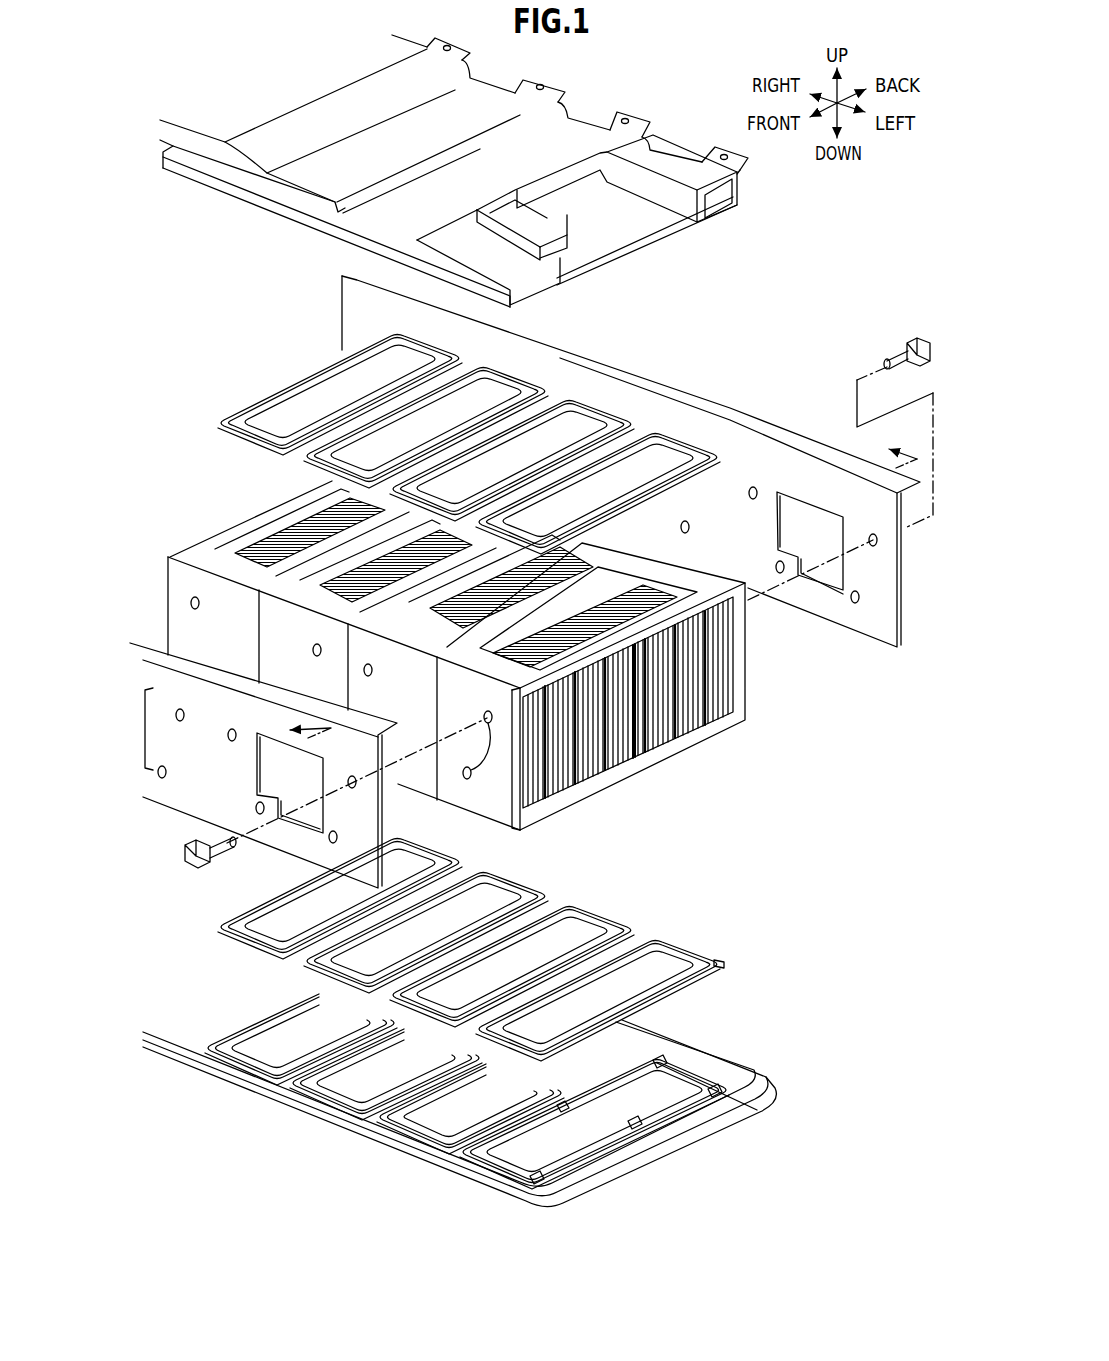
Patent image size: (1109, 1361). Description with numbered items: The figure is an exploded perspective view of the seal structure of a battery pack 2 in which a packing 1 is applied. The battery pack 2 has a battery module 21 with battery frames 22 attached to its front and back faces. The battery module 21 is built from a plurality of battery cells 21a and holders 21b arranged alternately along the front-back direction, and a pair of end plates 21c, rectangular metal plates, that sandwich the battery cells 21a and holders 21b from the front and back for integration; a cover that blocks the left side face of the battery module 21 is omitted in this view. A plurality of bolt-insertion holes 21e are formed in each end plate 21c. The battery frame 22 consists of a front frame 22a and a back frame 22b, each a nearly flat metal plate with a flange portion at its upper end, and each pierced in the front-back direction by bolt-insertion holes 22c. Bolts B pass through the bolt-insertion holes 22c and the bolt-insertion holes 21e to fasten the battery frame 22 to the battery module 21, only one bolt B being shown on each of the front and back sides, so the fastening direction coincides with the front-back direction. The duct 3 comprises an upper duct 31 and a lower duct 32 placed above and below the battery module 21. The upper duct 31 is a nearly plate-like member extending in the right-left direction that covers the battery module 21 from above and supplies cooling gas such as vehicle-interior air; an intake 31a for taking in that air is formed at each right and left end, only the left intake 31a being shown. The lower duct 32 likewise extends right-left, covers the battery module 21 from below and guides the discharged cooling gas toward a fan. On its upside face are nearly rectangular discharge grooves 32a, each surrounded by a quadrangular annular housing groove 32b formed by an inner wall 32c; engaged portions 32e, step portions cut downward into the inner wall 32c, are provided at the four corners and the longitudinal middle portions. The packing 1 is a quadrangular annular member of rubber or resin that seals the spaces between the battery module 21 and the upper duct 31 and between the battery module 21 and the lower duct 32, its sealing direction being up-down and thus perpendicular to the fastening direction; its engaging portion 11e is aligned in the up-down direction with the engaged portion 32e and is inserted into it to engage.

The packing 1 is at (449, 343).
The engaging portion 11e is at (724, 964).
The battery pack 2 is at (768, 685).
The battery module 21 is at (287, 587).
The battery cell 21a is at (660, 733).
The holder 21b is at (632, 745).
The end plate 21c is at (747, 648).
The bolt-insertion hole 21e is at (467, 780).
The battery frame 22 is at (178, 815).
The front frame 22a is at (280, 835).
The back frame 22b is at (637, 461).
The bolt-insertion hole 22c is at (340, 838).
The duct 3 is at (783, 1058).
The upper duct 31 is at (557, 135).
The intake 31a is at (680, 200).
The lower duct 32 is at (773, 1080).
The discharge groove 32a is at (670, 1093).
The housing groove 32b is at (720, 1087).
The inner wall 32c is at (683, 1107).
The engaged portion 32e is at (567, 1170).
The bolt B is at (220, 858).